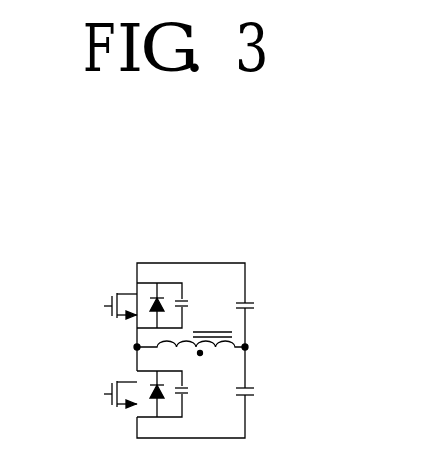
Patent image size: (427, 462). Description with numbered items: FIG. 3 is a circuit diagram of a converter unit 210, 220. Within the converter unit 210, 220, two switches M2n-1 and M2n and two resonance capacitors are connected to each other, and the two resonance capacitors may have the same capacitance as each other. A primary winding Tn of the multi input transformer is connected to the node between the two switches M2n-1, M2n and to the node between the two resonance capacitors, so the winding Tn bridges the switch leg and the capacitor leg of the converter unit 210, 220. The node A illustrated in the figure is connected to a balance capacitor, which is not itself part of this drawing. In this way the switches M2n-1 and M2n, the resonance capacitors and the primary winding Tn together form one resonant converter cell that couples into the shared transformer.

The resonant converter cell 210 is at (228, 198).
The resonant converter cell 220 is at (182, 304).
The switch M2n-1 is at (119, 305).
The switch M2n is at (127, 394).
The node A is at (126, 347).
The primary winding Tn is at (192, 336).